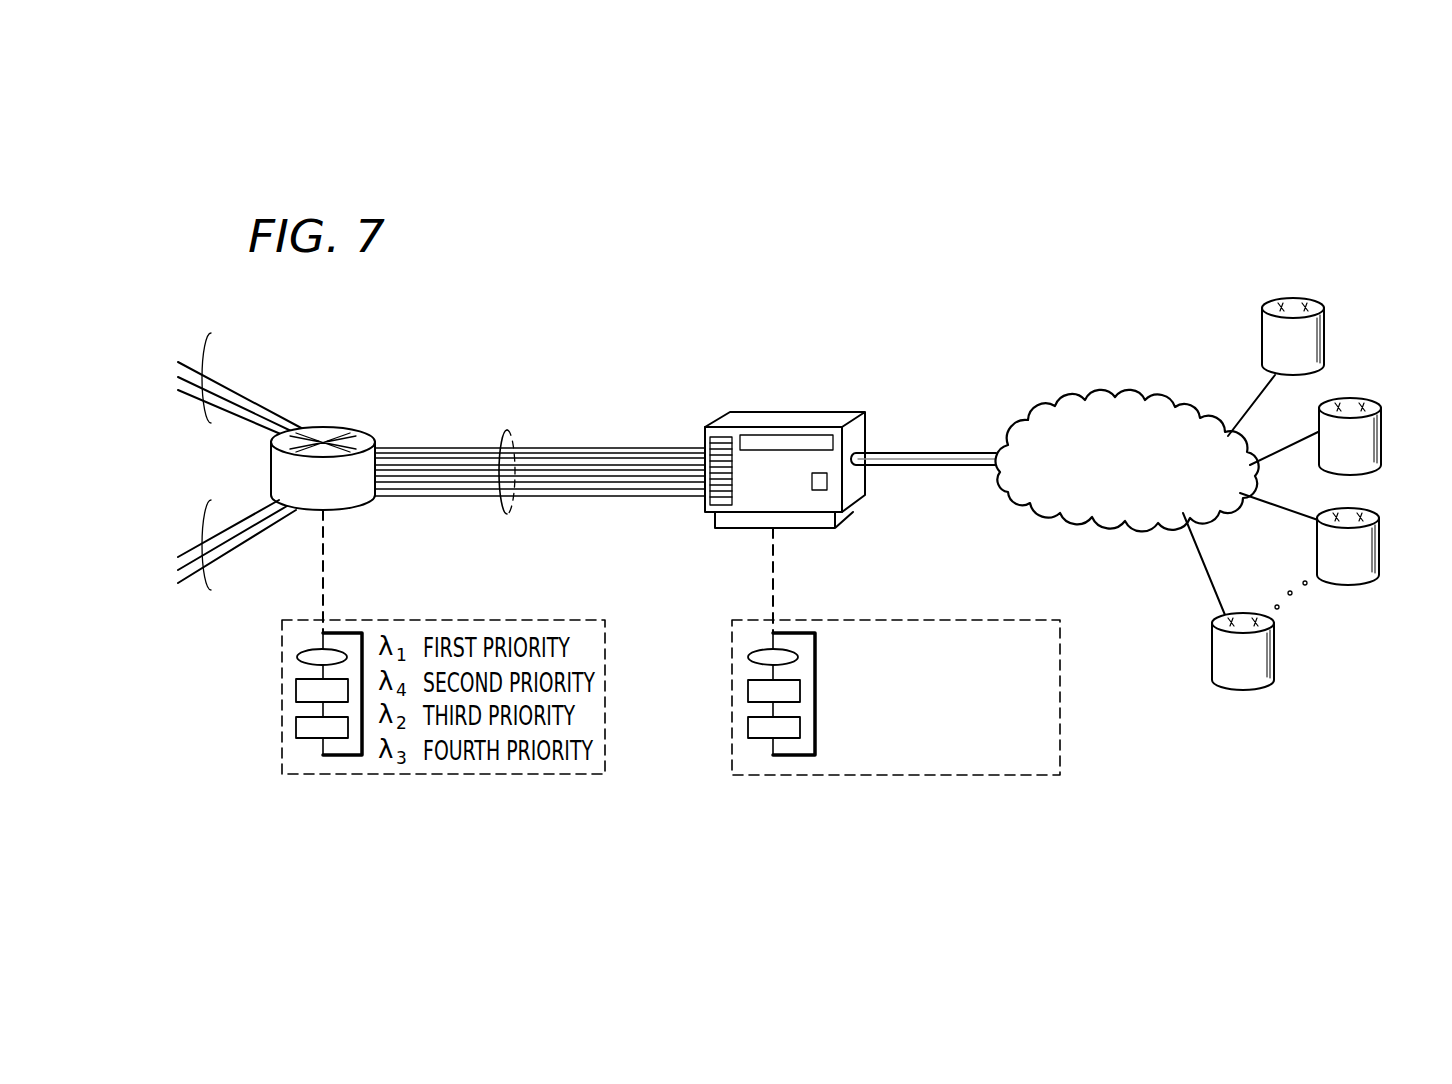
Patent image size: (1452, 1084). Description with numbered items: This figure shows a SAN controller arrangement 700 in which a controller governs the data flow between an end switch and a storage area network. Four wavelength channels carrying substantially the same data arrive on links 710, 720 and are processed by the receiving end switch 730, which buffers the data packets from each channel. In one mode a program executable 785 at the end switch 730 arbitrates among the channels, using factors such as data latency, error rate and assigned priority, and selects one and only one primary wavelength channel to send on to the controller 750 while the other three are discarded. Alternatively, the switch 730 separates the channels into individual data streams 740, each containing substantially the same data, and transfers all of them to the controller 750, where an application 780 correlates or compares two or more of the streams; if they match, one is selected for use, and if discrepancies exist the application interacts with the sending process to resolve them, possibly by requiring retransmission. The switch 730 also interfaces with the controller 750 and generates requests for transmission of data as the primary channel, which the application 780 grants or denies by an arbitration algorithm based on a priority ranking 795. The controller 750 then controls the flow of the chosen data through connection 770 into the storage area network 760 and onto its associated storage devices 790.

The optical network system 700 is at (446, 364).
The link 710 is at (208, 350).
The link 720 is at (208, 507).
The receiving end switch 730 is at (328, 427).
The individual data streams 740 is at (510, 429).
The controller 750 is at (786, 411).
The storage area network 760 is at (1126, 398).
The connection 770 is at (962, 450).
The application 780 is at (752, 655).
The program executable 785 is at (300, 655).
The storage devices 790 is at (1325, 340).
The priority ranking 795 is at (1055, 753).